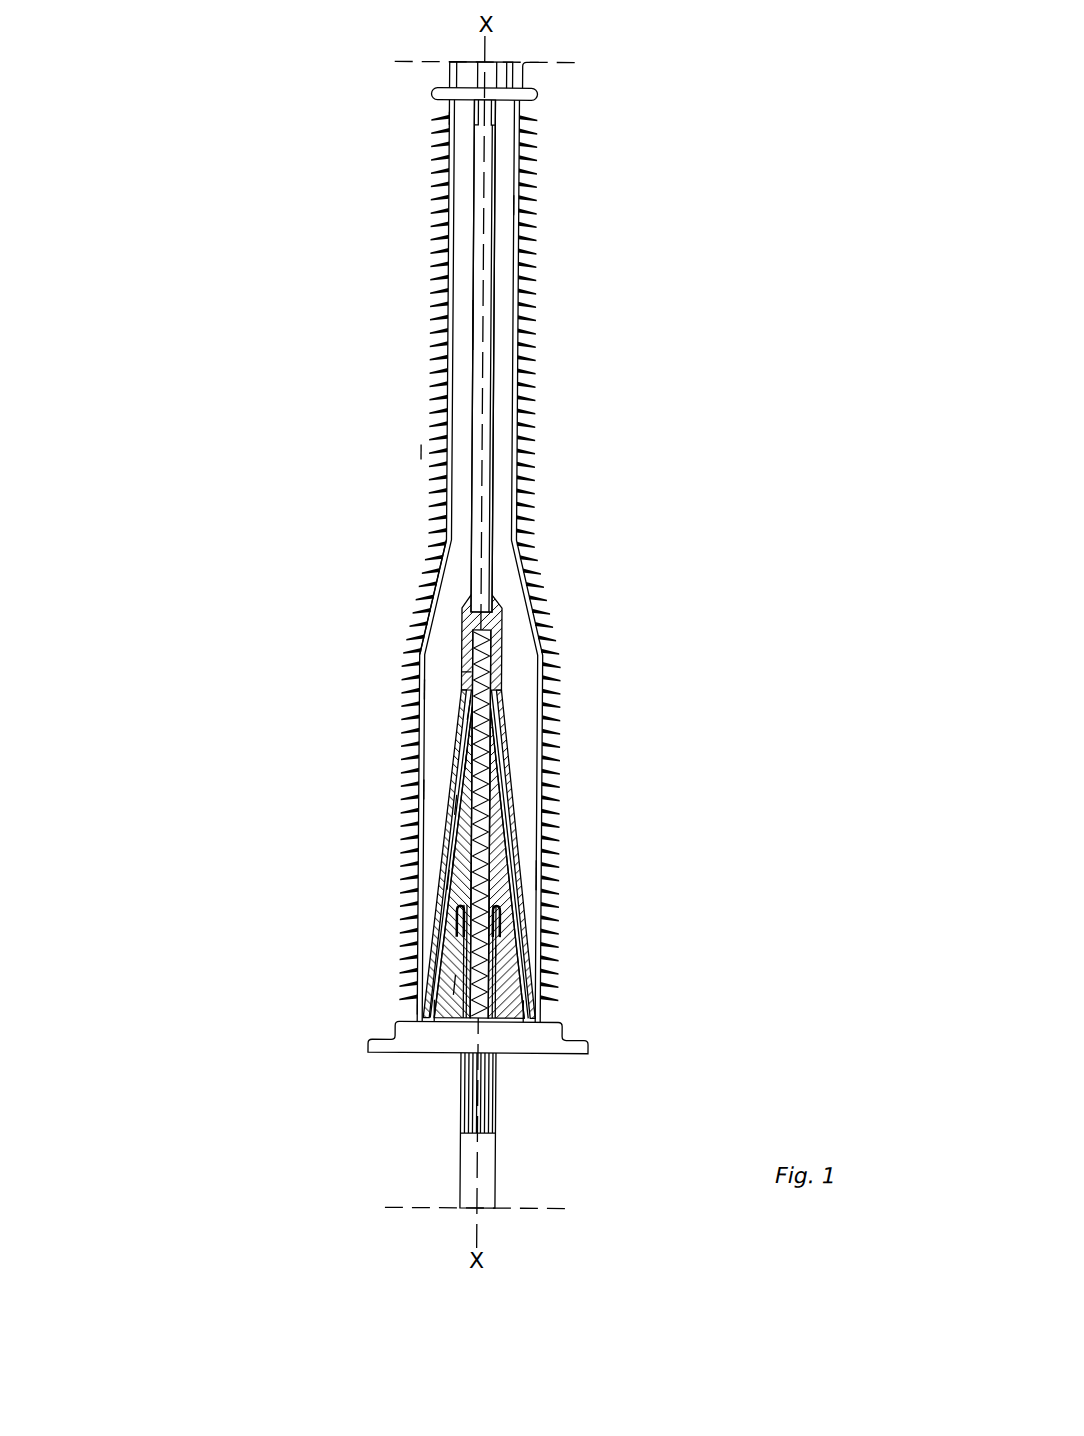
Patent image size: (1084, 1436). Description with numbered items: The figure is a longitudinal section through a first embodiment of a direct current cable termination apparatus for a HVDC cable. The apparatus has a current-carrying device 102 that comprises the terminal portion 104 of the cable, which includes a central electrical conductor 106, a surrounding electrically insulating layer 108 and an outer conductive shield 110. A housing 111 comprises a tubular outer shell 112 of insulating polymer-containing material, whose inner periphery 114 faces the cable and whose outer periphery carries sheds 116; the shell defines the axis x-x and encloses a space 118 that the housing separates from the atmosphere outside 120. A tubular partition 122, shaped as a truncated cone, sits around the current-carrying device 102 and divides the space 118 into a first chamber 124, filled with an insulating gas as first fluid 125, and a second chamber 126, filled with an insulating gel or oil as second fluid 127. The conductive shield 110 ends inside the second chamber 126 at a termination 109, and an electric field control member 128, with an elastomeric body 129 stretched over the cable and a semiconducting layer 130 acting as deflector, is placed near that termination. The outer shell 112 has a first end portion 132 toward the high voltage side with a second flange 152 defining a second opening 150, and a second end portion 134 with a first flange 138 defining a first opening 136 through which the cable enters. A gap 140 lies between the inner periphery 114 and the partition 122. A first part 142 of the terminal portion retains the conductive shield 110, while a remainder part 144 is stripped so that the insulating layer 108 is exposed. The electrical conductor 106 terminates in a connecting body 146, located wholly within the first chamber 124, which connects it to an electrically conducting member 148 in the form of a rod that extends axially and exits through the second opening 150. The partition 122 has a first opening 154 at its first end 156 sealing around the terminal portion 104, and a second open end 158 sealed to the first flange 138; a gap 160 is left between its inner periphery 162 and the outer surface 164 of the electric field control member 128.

The current-carrying device 102 is at (455, 415).
The terminal portion 104 is at (494, 780).
The central electrical conductor 106 is at (469, 707).
The electrically insulating layer 108 is at (469, 754).
The termination 109 is at (506, 952).
The conductive shield 110 is at (468, 989).
The housing 111 is at (397, 452).
The tubular outer shell 112 is at (443, 158).
The inner periphery 114 is at (516, 205).
The sheds 116 is at (440, 216).
The space 118 is at (443, 624).
The atmosphere outside 120 is at (296, 327).
The tubular partition 122 is at (446, 803).
The first chamber 124 is at (463, 322).
The first fluid 125 is at (540, 680).
The second chamber 126 is at (450, 964).
The second fluid 127 is at (501, 992).
The electric field control member 128 is at (455, 838).
The elastomeric body 129 is at (462, 859).
The semiconducting layer 130 is at (461, 915).
The first end portion 132 is at (430, 118).
The second end portion 134 is at (399, 1009).
The first opening 136 is at (468, 1060).
The first flange 138 is at (388, 1052).
The gap 140 is at (438, 789).
The first part 142 is at (616, 1023).
The remainder part 144 is at (655, 908).
The connecting body 146 is at (467, 600).
The electrically conducting member 148 is at (484, 272).
The second opening 150 is at (472, 84).
The second flange 152 is at (433, 94).
The first opening of the inner shell 154 is at (463, 677).
The first end 156 is at (441, 688).
The second open end 158 is at (530, 1008).
The gap 160 is at (549, 880).
The inner periphery of the partition 162 is at (441, 1005).
The outer surface 164 is at (468, 873).